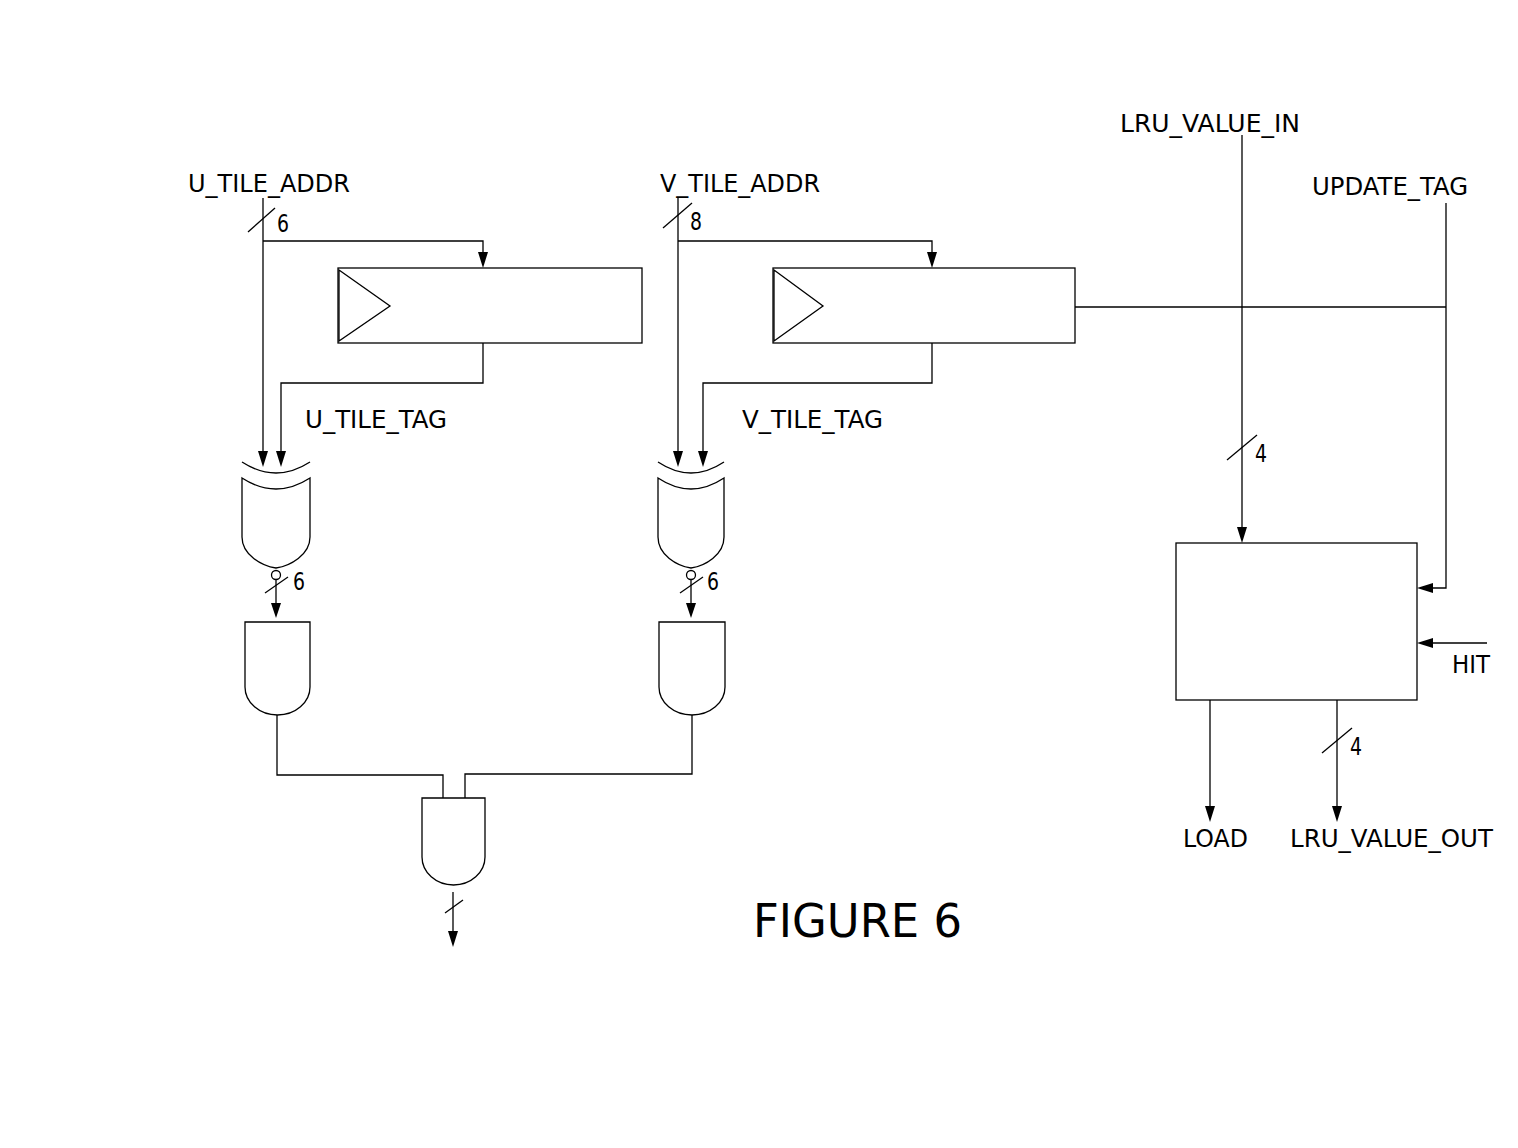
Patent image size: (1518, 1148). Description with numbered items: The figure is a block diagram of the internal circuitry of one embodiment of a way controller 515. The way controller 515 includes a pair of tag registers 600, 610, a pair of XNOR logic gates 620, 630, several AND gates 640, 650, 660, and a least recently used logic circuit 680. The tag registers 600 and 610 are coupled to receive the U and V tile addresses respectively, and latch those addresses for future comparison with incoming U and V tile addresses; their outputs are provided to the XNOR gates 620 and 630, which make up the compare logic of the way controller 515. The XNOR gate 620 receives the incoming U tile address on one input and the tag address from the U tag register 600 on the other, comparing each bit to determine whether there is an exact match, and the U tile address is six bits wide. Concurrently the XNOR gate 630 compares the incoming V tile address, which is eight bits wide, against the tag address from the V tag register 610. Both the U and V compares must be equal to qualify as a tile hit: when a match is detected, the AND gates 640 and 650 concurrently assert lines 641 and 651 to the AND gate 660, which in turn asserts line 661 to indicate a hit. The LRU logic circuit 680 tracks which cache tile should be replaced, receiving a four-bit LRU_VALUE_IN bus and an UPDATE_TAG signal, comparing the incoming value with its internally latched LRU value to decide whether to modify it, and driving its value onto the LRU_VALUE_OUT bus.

The way controller 515 is at (289, 856).
The U tag register 600 is at (636, 340).
The V tag register 610 is at (1068, 340).
The XNOR logic gate 620 is at (276, 521).
The XNOR logic gate 630 is at (691, 521).
The AND gate 640 is at (277, 668).
The AND gate 650 is at (692, 668).
The line 641 is at (281, 751).
The line 651 is at (695, 749).
The AND gate 660 is at (453, 841).
The line 661 is at (458, 916).
The least recently used (LRU) logic circuit 680 is at (1409, 691).